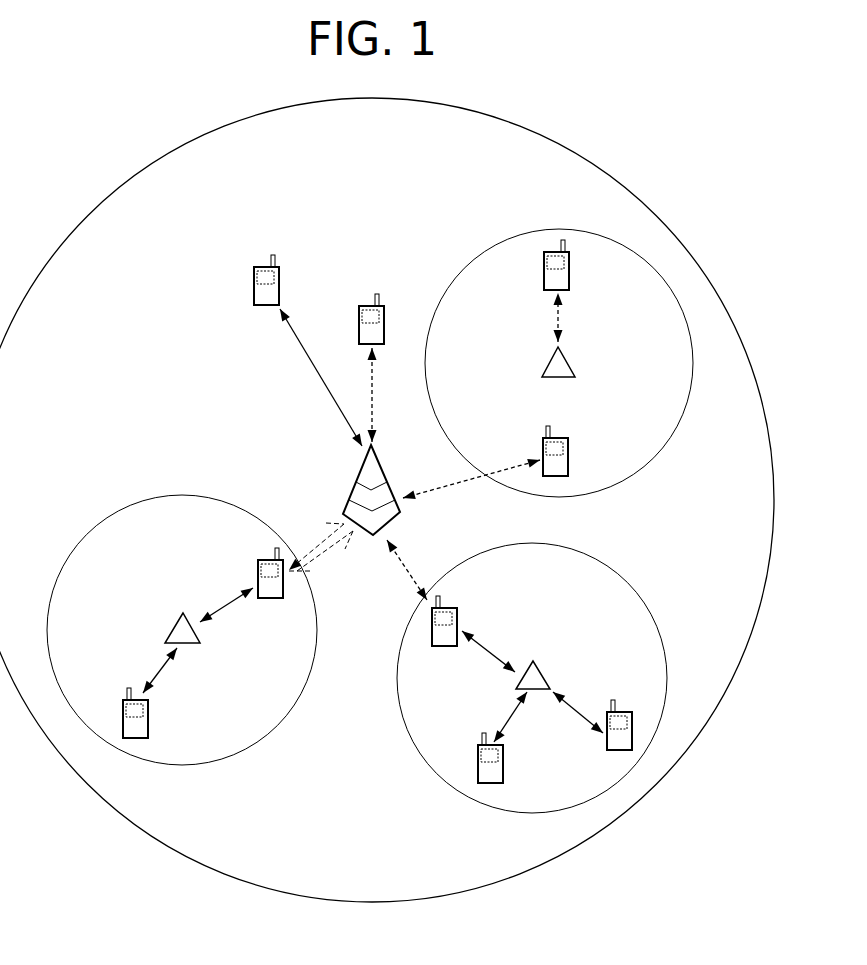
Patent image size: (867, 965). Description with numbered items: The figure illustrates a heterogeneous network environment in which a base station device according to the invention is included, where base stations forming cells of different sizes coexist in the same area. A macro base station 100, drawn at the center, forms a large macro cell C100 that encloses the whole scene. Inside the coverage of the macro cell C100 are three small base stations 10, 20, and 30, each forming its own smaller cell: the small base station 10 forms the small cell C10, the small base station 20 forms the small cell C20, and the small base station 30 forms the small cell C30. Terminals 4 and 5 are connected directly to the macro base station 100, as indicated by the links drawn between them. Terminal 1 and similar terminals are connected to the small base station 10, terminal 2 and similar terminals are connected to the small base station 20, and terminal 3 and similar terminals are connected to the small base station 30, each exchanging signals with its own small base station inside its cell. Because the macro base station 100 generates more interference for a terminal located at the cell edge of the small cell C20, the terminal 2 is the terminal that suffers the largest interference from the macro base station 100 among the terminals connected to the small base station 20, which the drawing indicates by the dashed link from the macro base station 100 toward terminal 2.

The macro cell C100 is at (652, 202).
The macro base station 100 is at (358, 470).
The small cell of small base station 10 C10 is at (132, 497).
The small cell of small base station 20 C20 is at (637, 590).
The small cell of small base station 30 C30 is at (503, 237).
The small base station 10 is at (172, 628).
The small base station 20 is at (545, 676).
The small base station 30 is at (568, 360).
The terminal 1 is at (274, 599).
The terminal 2 is at (448, 648).
The terminal 3 is at (560, 478).
The terminal 4 is at (361, 308).
The terminal 5 is at (255, 275).